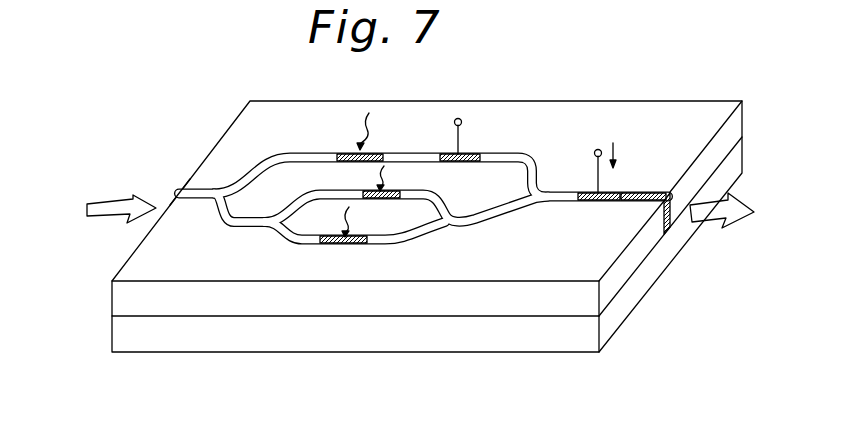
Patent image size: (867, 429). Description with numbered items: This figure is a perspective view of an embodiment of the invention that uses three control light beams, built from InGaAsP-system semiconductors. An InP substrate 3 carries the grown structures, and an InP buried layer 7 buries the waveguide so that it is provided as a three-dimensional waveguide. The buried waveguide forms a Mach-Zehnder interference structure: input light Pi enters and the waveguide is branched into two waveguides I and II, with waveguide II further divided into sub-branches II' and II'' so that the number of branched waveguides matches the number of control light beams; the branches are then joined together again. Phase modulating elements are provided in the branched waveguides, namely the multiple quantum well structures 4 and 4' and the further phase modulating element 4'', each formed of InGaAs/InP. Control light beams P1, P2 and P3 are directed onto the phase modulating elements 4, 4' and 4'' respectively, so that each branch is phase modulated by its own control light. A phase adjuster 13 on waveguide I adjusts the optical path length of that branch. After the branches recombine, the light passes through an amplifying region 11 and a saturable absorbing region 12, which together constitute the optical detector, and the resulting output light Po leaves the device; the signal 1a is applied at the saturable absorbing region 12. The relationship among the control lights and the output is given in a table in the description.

The InP substrate 3 is at (543, 337).
The InP buried layer 7 is at (495, 308).
The multiple quantum well structure 4 is at (345, 139).
The multiple quantum well structure 4' is at (387, 208).
The phase modulating element 4'' is at (353, 256).
The phase adjuster 13 is at (473, 154).
The amplifying region 11 is at (583, 201).
The saturable absorbing region 12 is at (640, 202).
The control signal 1a is at (627, 151).
The branched waveguide I is at (253, 172).
The branched waveguide II is at (231, 231).
The sub-branch of second waveguide II' is at (406, 196).
The sub-branch of second waveguide II'' is at (344, 247).
The light power in branch I P1 is at (374, 131).
The light power in branch II' P2 is at (396, 178).
The light power in branch II'' P3 is at (360, 222).
The input light Pi is at (121, 195).
The output light Po is at (726, 224).